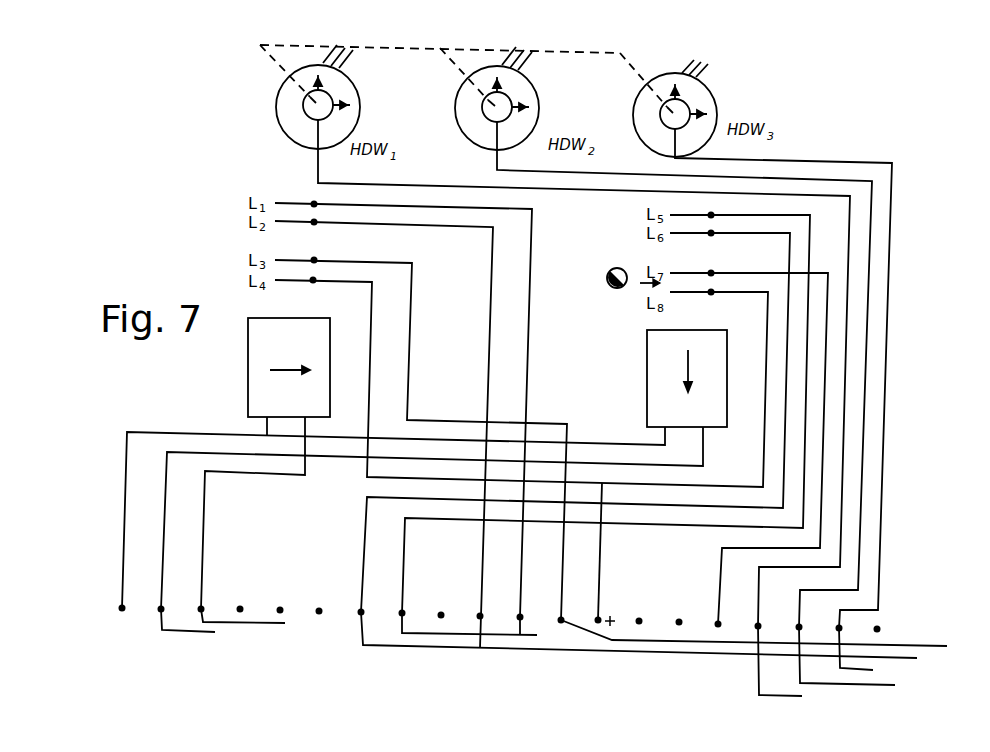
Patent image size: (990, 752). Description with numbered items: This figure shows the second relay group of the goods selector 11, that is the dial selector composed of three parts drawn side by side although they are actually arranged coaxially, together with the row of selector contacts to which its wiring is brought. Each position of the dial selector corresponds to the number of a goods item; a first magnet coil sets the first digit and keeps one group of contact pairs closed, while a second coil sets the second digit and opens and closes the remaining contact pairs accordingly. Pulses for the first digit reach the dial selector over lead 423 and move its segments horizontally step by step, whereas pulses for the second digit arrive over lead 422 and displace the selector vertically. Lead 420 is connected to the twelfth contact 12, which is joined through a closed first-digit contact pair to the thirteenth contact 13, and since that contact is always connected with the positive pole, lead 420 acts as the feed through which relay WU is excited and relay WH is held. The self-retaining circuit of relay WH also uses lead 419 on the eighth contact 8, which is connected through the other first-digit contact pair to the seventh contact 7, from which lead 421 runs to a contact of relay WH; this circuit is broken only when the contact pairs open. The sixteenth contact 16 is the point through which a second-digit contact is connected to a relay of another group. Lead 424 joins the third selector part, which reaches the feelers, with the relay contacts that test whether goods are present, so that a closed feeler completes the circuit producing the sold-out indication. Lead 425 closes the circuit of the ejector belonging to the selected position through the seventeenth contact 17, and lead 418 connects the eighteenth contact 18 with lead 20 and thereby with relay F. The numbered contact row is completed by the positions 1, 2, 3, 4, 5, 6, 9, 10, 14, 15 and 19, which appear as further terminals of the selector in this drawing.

The terminal 1 is at (129, 600).
The terminal 2 is at (168, 601).
The terminal 3 is at (208, 601).
The lead 4 is at (240, 597).
The terminal 5 is at (281, 597).
The lead 6 is at (319, 598).
The seventh contact of the goods selector 7 is at (368, 603).
The eighth contact of the goods selector 8 is at (409, 604).
The lead 9 is at (441, 605).
The connection 10 is at (492, 605).
The goods selector 11 is at (532, 607).
The twelfth contact of the goods selector 12 is at (574, 609).
The thirteenth contact of the goods selector 13 is at (610, 609).
The terminal 14 is at (645, 609).
The terminal 15 is at (685, 610).
The sixteenth contact of the dial selector 16 is at (730, 616).
The seventeenth contact of the goods selector 17 is at (770, 618).
The eighteenth contact of the goods selector 18 is at (811, 618).
The connection 19 is at (851, 620).
The lead 20 is at (890, 620).
The lead 418 is at (865, 661).
The lead 419 is at (487, 629).
The lead 420 is at (771, 636).
The lead 421 is at (656, 640).
The lead 422 is at (188, 632).
The lead 423 is at (243, 626).
The lead 424 is at (873, 654).
The lead 425 is at (798, 666).